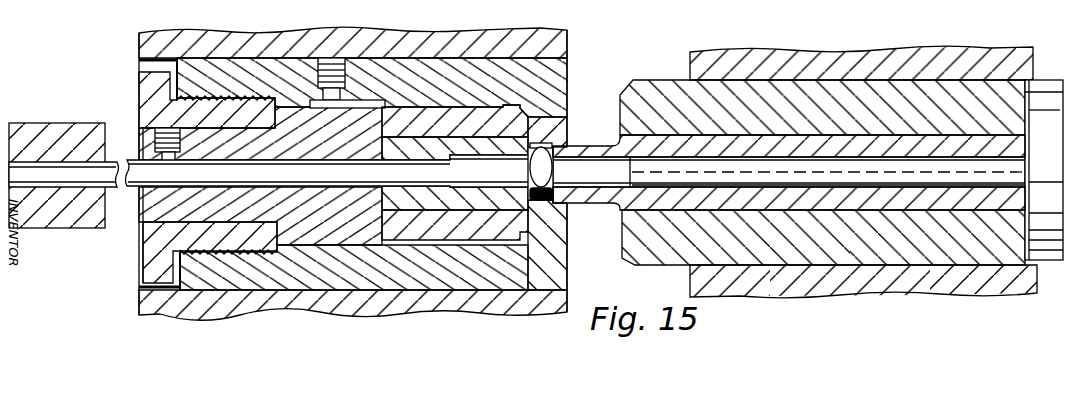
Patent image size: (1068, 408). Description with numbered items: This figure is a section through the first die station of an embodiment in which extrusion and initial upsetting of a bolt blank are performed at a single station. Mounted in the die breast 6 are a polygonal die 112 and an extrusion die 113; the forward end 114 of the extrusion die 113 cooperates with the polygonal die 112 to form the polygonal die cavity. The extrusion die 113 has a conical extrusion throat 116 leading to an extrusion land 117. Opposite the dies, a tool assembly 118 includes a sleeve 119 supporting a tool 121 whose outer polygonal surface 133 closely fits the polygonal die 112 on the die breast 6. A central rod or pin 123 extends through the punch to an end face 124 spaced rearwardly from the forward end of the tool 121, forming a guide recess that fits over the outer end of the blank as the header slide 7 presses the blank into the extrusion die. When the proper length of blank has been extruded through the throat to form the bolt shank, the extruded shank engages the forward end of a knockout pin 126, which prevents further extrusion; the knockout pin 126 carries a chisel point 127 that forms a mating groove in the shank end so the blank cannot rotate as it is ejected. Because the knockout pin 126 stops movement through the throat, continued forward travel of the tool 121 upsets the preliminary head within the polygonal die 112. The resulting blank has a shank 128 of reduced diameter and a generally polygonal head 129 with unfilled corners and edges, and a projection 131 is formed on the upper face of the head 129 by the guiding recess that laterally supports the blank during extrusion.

The die breast 6 is at (437, 36).
The header slide 7 is at (796, 52).
The polygonal die 112 is at (566, 214).
The extrusion die 113 is at (463, 213).
The forward end of the extrusion die 114 is at (534, 122).
The conical extrusion throat 116 is at (537, 165).
The extrusion land 117 is at (528, 186).
The tool assembly 118 is at (645, 72).
The sleeve 119 is at (634, 100).
The tool 121 is at (663, 140).
The central rod or pin 123 is at (762, 162).
The end face 124 is at (556, 175).
The knockout pin 126 is at (343, 172).
The chisel point 127 is at (463, 161).
The shank 128 is at (467, 184).
The polygonal head 129 is at (538, 205).
The projection 131 is at (562, 154).
The outer polygonal surface 133 is at (548, 148).